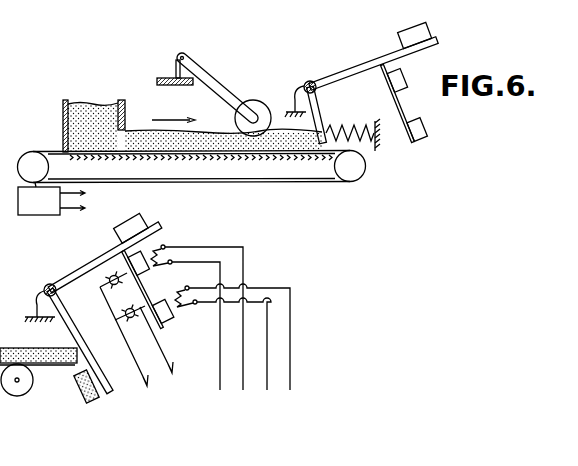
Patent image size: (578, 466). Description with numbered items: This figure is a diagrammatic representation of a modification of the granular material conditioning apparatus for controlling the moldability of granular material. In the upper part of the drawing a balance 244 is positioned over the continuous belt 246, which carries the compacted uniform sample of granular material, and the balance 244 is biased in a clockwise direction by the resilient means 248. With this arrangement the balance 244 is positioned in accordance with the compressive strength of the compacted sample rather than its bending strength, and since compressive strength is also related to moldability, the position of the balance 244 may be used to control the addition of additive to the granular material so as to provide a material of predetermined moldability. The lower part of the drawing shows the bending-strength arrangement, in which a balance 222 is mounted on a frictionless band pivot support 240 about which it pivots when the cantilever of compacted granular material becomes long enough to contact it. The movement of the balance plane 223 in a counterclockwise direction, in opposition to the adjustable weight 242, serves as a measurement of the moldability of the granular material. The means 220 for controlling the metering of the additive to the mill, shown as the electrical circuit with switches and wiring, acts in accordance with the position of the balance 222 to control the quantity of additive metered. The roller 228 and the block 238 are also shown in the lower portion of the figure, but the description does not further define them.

The means for controlling the metering of the additive 220 is at (251, 274).
The balance 222 is at (99, 252).
The balance plane 223 is at (65, 331).
The conveyor roller 228 is at (13, 396).
The shingle block 238 is at (45, 366).
The frictionless band pivot support 240 is at (46, 286).
The adjustable weight 242 is at (153, 226).
The balance 244 is at (347, 67).
The continuous belt 246 is at (265, 156).
The resilient means 248 is at (347, 130).